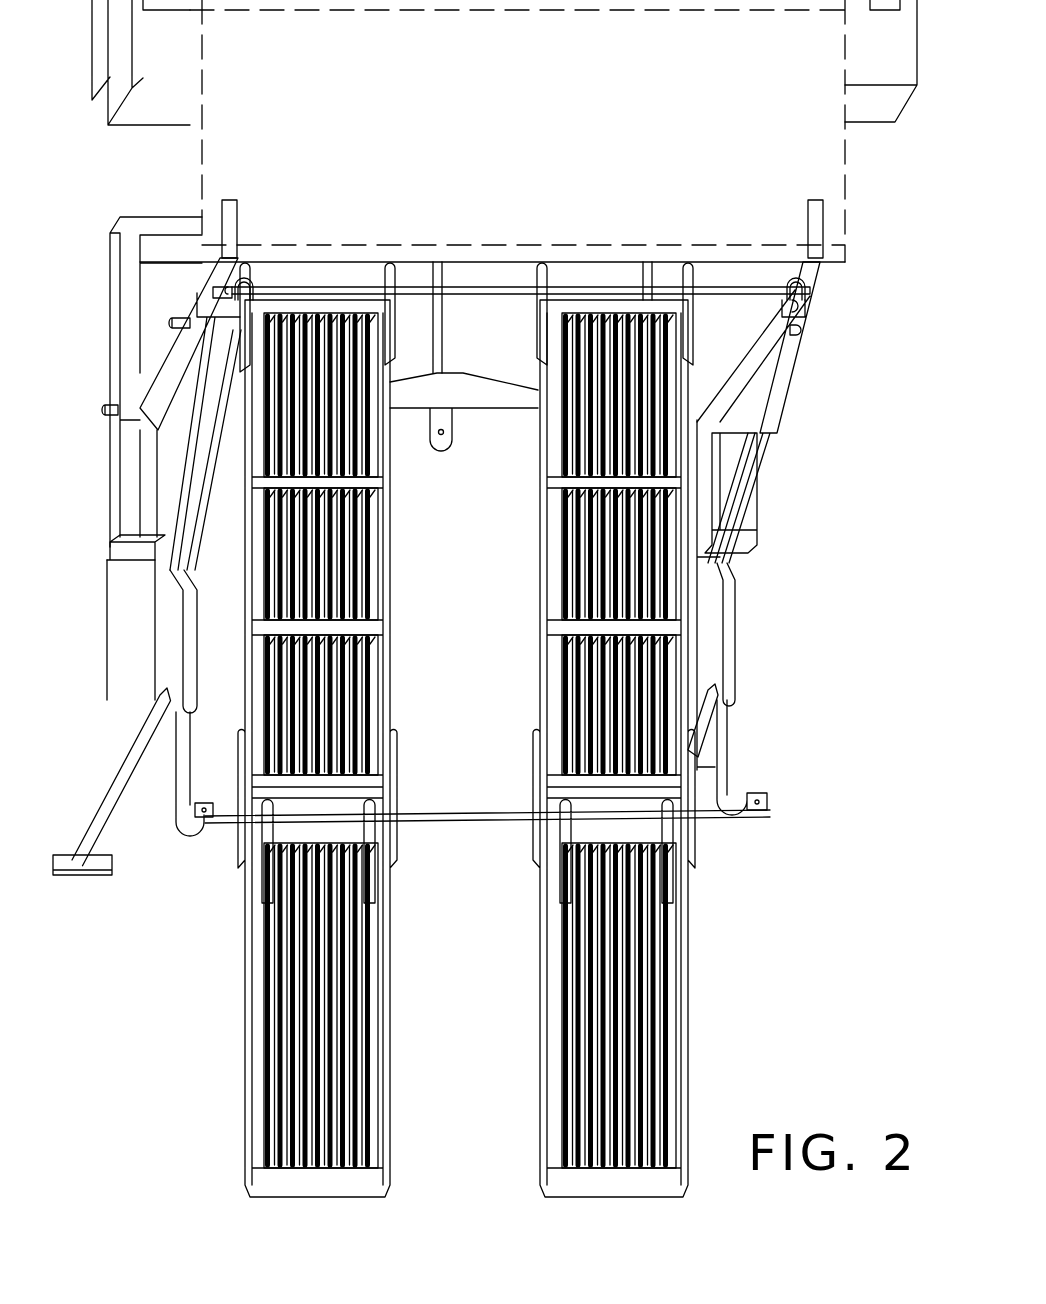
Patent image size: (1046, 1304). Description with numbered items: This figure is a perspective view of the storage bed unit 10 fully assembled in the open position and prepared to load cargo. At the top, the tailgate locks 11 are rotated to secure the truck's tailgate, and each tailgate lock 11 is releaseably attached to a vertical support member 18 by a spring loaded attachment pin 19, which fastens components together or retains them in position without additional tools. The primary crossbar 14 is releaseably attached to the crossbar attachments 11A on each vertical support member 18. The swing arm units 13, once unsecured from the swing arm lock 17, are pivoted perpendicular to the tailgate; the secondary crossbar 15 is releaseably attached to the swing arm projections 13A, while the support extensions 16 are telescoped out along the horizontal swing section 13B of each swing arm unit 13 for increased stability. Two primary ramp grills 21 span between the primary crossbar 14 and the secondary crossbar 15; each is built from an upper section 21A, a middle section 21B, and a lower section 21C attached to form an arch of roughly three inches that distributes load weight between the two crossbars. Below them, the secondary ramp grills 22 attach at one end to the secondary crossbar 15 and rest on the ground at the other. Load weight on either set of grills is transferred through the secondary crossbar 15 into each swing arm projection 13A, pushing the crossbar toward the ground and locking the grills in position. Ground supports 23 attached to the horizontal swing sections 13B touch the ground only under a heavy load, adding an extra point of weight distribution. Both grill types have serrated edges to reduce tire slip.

The storage bed unit 10 is at (122, 215).
The tailgate lock 11 is at (232, 212).
The crossbar attachment 11A is at (246, 280).
The swing arm unit 13 is at (450, 728).
The swing arm projection 13A is at (183, 826).
The horizontal swing section of the swing arm unit 13B is at (170, 602).
The primary crossbar 14 is at (457, 290).
The secondary crossbar 15 is at (466, 822).
The support extension 16 is at (130, 510).
The swing arm lock 17 is at (452, 430).
The vertical support member 18 is at (185, 297).
The spring loaded attachment pin 19 is at (172, 325).
The primary ramp grill 21 is at (479, 748).
The upper section 21A is at (555, 450).
The middle section 21B is at (385, 587).
The lower section 21C is at (385, 711).
The secondary ramp grill 22 is at (262, 1000).
The ground support 23 is at (130, 785).